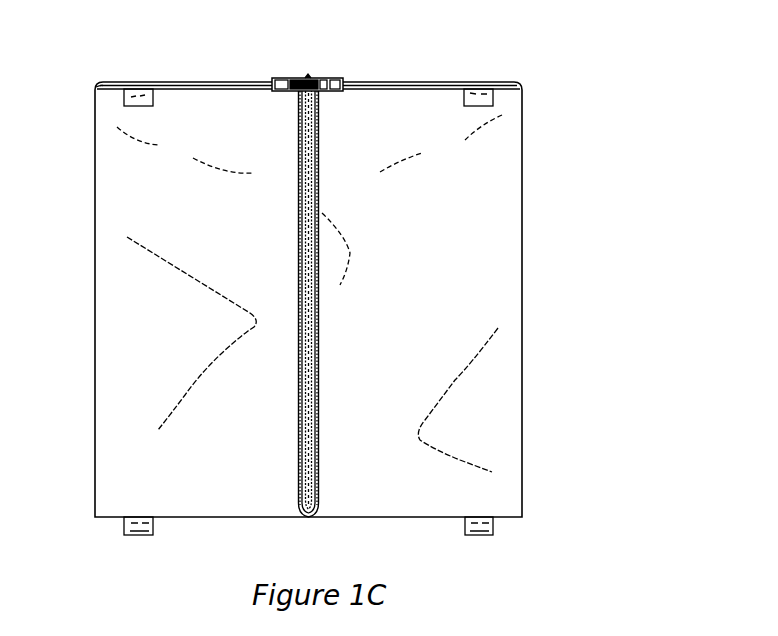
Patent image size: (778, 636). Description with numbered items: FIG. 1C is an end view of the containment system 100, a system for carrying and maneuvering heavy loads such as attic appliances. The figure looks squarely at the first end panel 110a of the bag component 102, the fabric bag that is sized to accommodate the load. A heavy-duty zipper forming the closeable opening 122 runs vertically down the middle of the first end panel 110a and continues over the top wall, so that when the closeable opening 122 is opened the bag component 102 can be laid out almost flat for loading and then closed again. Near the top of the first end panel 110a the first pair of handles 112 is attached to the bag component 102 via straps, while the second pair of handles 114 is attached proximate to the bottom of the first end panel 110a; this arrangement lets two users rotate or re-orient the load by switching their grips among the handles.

The containment system 100 is at (571, 176).
The bag component 102 is at (94, 330).
The first end panel 110a is at (412, 293).
The first pair of handles 112 is at (462, 91).
The second pair of handles 114 is at (152, 531).
The closeable opening 122 is at (310, 240).